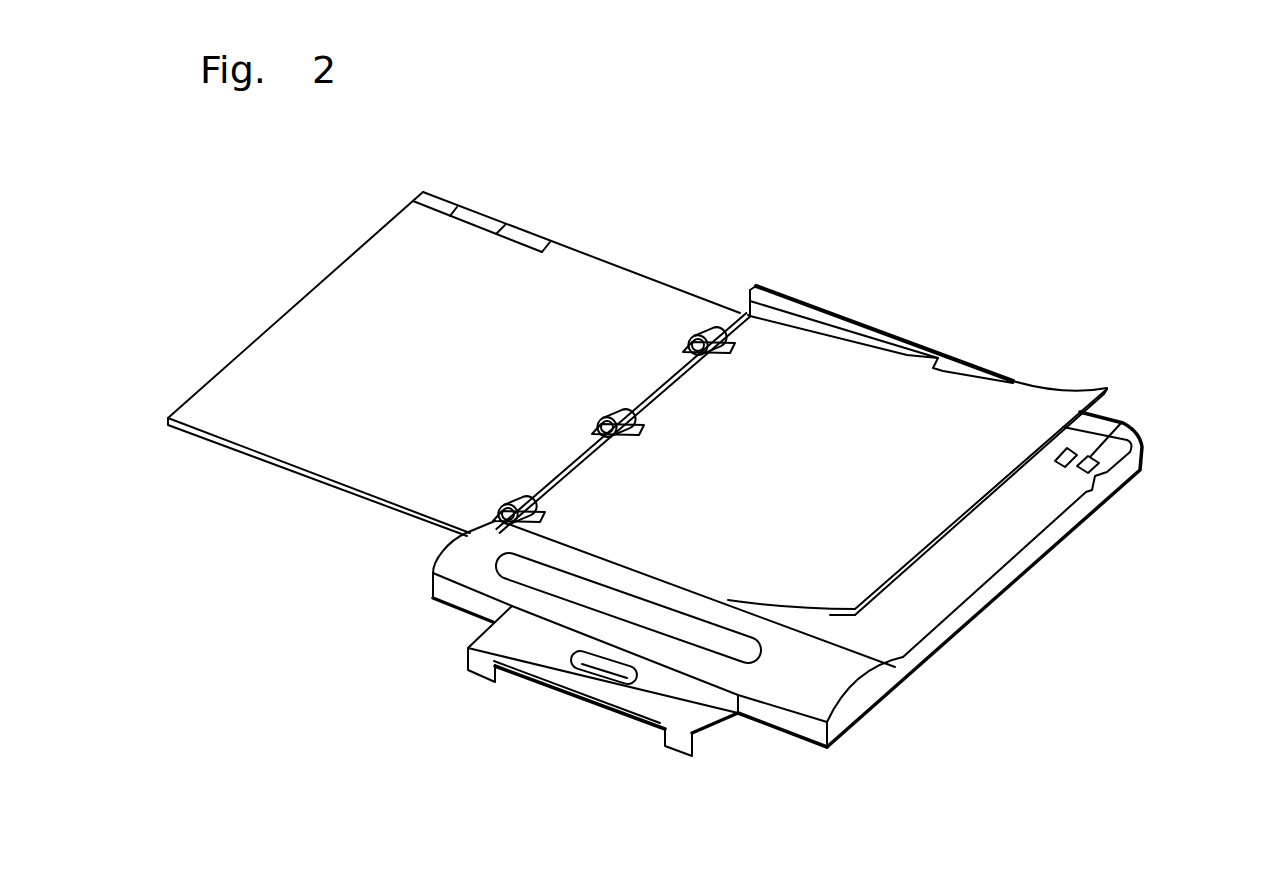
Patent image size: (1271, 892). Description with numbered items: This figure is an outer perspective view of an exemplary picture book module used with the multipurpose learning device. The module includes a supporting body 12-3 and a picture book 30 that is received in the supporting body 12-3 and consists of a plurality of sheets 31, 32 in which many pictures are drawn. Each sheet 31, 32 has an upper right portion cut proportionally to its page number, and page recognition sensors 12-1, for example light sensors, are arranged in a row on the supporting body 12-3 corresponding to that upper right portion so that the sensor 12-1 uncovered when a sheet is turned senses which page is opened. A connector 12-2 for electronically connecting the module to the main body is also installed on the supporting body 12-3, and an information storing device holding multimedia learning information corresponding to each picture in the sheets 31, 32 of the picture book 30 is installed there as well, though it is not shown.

The picture book 30 is at (930, 230).
The sheet 31 is at (576, 277).
The sheet 32 is at (827, 367).
The page recognition sensor 12-1 is at (1122, 422).
The connector 12-2 is at (655, 697).
The supporting body 12-3 is at (893, 690).